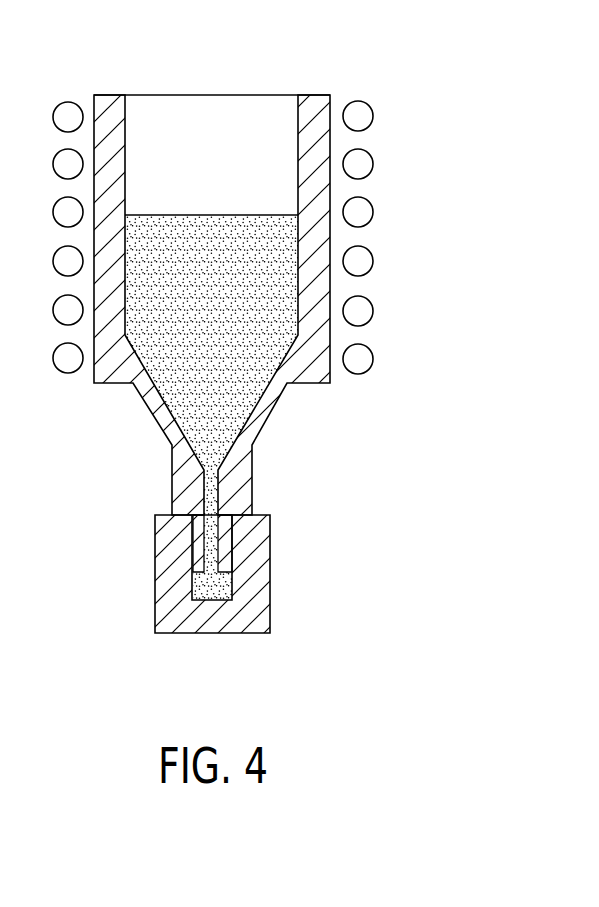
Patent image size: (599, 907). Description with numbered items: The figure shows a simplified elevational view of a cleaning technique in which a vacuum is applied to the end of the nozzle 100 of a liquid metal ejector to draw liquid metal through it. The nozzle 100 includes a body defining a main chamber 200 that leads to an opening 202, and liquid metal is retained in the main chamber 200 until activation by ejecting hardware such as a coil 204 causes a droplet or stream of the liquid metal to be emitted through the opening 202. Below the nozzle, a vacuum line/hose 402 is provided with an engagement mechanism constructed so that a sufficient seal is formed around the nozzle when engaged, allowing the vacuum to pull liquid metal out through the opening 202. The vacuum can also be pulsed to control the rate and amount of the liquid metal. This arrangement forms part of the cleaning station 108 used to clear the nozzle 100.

The nozzle 100 is at (380, 150).
The cleaning station 108 is at (287, 573).
The main chamber 200 is at (121, 96).
The opening 202 is at (212, 518).
The coil 204 is at (373, 262).
The vacuum line/hose 402 is at (270, 608).